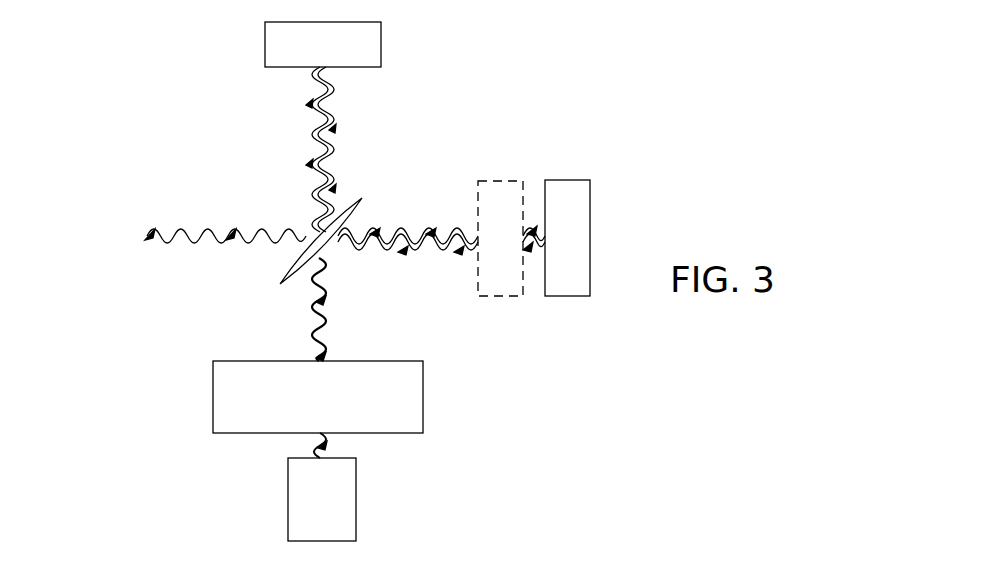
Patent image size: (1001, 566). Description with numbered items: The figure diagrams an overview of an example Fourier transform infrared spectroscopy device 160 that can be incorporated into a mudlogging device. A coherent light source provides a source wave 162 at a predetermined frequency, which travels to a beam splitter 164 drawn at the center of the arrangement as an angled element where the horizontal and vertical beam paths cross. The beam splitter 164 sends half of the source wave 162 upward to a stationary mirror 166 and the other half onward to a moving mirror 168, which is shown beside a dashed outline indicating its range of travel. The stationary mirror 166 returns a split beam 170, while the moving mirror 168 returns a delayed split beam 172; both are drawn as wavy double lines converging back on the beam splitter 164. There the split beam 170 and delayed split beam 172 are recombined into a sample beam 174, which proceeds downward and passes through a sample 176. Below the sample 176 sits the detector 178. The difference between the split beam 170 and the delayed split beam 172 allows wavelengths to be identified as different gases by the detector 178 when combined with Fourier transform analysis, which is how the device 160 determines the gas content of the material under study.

The Fourier transform infrared spectroscopy (FTIR) device 160 is at (556, 54).
The source wave 162 is at (172, 250).
The beam splitter 164 is at (278, 286).
The stationary mirror 166 is at (323, 44).
The moving mirror 168 is at (567, 238).
The split beam 170 is at (334, 89).
The delayed split beam 172 is at (384, 250).
The sample beam 174 is at (310, 338).
The sample 176 is at (318, 409).
The detector 178 is at (322, 499).